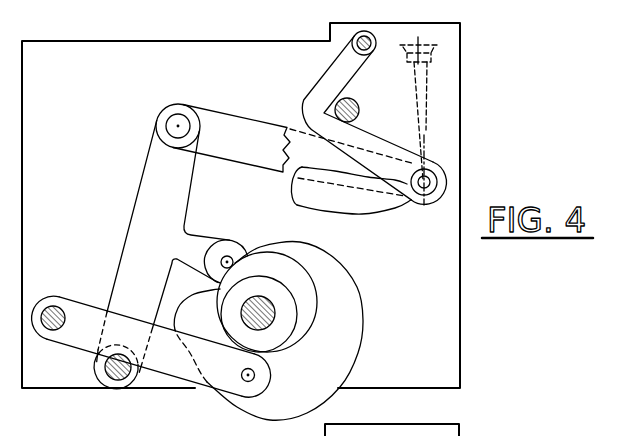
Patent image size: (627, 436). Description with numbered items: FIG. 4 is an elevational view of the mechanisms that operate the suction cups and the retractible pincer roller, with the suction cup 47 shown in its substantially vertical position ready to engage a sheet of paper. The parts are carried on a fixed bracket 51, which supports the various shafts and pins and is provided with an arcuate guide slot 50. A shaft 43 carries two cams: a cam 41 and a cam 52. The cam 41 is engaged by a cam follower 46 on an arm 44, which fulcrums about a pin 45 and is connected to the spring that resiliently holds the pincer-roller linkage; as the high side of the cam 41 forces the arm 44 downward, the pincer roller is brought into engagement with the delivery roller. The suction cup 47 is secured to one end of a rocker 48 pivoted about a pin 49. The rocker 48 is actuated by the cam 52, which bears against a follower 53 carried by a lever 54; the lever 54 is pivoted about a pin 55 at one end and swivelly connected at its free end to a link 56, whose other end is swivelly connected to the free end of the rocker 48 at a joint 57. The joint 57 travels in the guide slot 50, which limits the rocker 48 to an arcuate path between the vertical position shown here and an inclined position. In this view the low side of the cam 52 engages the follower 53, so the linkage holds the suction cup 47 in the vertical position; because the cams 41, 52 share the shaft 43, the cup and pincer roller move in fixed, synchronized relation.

The cam 41 is at (303, 290).
The shaft 43 is at (248, 323).
The arm 44 is at (85, 318).
The pin 45 is at (53, 306).
The cam follower 46 is at (260, 383).
The suction cup 47 is at (418, 50).
The rocker 48 is at (315, 98).
The pin 49 is at (368, 53).
The guide slot 50 is at (345, 207).
The fixed bracket 51 is at (447, 132).
The cam 52 is at (352, 288).
The follower 53 is at (230, 250).
The lever 54 is at (165, 218).
The pin 55 is at (117, 381).
The link 56 is at (214, 117).
The joint 57 is at (408, 177).